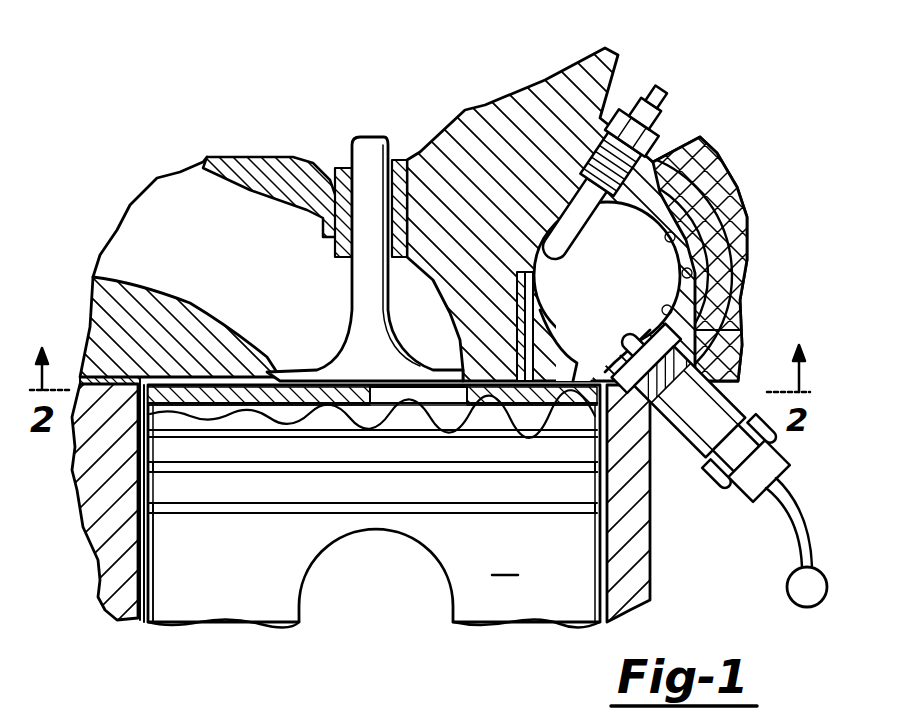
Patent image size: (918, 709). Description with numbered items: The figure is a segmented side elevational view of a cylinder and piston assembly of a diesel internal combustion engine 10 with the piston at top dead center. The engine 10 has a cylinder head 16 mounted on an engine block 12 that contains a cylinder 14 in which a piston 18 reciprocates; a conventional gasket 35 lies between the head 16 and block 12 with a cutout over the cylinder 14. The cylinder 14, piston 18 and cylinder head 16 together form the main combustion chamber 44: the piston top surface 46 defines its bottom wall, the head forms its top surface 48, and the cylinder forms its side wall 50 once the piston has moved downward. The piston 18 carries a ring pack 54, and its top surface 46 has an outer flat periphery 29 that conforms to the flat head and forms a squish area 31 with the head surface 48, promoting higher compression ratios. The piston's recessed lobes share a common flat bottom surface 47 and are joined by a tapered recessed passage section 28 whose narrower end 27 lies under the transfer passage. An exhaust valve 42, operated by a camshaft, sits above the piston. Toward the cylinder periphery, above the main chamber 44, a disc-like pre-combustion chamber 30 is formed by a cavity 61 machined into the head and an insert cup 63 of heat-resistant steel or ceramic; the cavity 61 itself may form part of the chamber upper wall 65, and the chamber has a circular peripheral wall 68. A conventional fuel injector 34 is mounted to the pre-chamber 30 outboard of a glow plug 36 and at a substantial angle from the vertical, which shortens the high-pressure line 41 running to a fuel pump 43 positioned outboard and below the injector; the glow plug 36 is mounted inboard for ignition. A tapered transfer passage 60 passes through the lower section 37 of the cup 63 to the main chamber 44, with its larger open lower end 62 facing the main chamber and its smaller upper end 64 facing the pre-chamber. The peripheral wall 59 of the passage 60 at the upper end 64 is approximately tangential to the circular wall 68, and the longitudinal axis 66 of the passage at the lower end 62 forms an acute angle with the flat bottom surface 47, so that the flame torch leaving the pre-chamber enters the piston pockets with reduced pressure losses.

The internal combustion engine 10 is at (165, 157).
The engine block 12 is at (623, 555).
The cylinder 14 is at (600, 545).
The cylinder head 16 is at (93, 277).
The piston 18 is at (374, 503).
The narrower end of passage section 27 is at (553, 405).
The recessed passage section 28 is at (505, 393).
The outer flat periphery 29 is at (202, 430).
The pre-combustion chamber 30 is at (700, 180).
The squish area 31 is at (182, 420).
The fuel injector 34 is at (722, 433).
The gasket 35 is at (80, 380).
The glow plug 36 is at (665, 115).
The lower section of cup 37 is at (160, 400).
The high-pressure line 41 is at (793, 502).
The exhaust valve 42 is at (345, 148).
The fuel pump 43 is at (830, 583).
The combustion chamber 44 is at (420, 395).
The piston top surface 46 is at (226, 420).
The flat bottom surface 47 is at (520, 395).
The top surface of chamber 48 is at (78, 495).
The side wall of chamber 50 is at (145, 430).
The ring pack 54 is at (270, 440).
The peripheral wall of passage 59 is at (705, 332).
The transfer passage 60 is at (556, 348).
The cavity 61 is at (735, 192).
The lower end of transfer passage 62 is at (545, 385).
The insert cup 63 is at (712, 233).
The upper end of transfer passage 64 is at (592, 345).
The chamber upper wall 65 is at (690, 150).
The longitudinal axis of passage 66 is at (617, 385).
The circular peripheral wall 68 is at (740, 302).